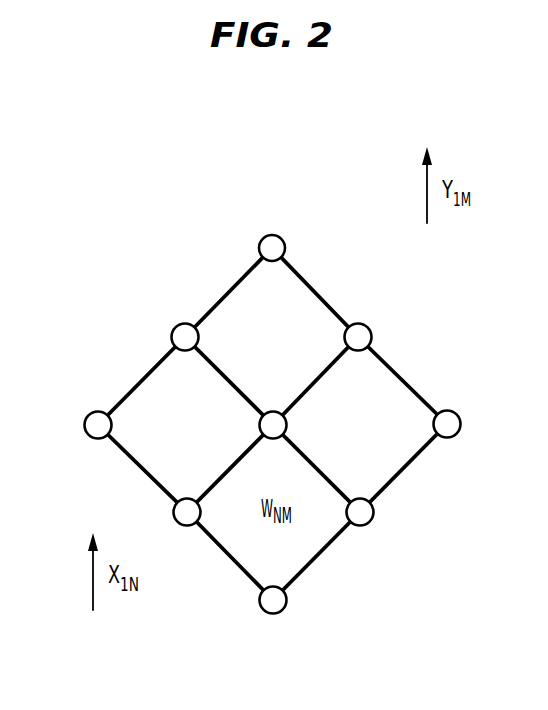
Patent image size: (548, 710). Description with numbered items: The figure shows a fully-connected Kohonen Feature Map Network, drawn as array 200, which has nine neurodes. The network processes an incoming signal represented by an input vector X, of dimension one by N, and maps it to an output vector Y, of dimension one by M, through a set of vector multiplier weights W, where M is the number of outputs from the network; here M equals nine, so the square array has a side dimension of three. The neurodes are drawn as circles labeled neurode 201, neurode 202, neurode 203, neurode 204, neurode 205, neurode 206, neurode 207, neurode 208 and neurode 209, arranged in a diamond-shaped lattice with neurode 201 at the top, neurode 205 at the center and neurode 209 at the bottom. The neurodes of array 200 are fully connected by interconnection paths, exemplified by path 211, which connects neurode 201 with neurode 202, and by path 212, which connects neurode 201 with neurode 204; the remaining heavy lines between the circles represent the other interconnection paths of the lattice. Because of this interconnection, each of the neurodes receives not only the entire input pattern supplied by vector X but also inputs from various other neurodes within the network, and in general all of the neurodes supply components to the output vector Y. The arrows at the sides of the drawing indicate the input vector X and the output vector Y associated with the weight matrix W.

The Kohonen Feature Map Network array 200 is at (59, 265).
The neurode 201 is at (272, 230).
The neurode 202 is at (371, 320).
The neurode 203 is at (464, 409).
The neurode 204 is at (177, 320).
The neurode 205 is at (274, 407).
The neurode 206 is at (381, 523).
The neurode 207 is at (79, 422).
The neurode 208 is at (186, 493).
The neurode 209 is at (291, 613).
The interconnection path 211 is at (312, 288).
The interconnection path 212 is at (228, 292).